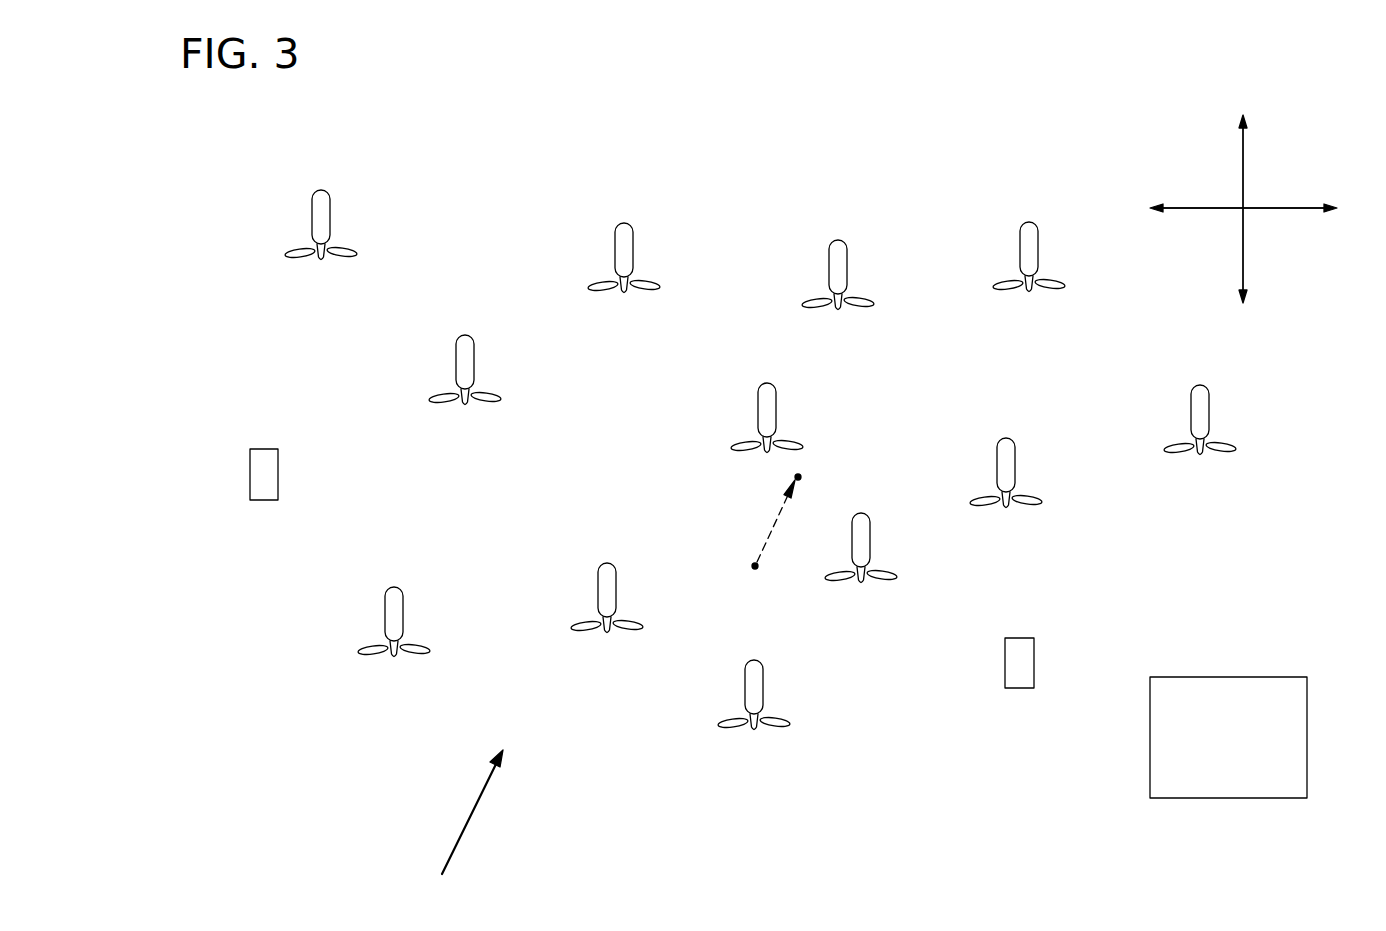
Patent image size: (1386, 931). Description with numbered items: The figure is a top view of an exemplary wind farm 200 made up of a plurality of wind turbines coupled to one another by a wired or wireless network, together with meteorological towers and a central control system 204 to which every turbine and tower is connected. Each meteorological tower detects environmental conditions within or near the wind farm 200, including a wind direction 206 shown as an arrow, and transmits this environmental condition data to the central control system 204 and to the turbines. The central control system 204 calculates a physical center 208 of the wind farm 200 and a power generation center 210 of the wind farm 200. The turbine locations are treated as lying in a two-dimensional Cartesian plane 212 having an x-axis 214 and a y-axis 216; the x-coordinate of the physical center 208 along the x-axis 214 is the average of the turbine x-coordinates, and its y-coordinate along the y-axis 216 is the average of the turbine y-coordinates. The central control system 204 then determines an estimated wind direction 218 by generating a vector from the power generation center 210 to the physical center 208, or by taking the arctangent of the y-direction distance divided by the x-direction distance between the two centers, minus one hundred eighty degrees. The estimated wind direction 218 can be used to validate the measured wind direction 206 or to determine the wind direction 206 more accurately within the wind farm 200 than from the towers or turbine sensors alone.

The wind farm 200 is at (513, 135).
The central control system 204 is at (1257, 676).
The wind direction 206 is at (478, 808).
The physical center 208 is at (800, 476).
The power generation center 210 is at (755, 568).
The two-dimensional Cartesian plane 212 is at (1180, 158).
The x-axis 214 is at (1287, 211).
The y-axis 216 is at (1245, 161).
The estimated wind direction 218 is at (776, 521).